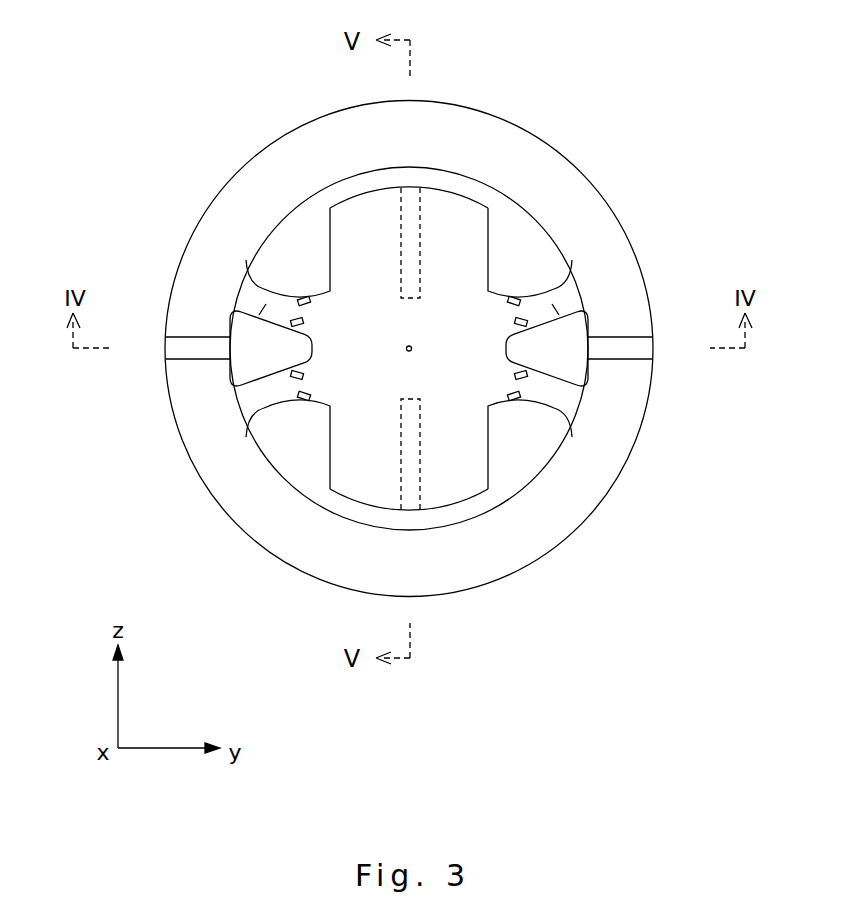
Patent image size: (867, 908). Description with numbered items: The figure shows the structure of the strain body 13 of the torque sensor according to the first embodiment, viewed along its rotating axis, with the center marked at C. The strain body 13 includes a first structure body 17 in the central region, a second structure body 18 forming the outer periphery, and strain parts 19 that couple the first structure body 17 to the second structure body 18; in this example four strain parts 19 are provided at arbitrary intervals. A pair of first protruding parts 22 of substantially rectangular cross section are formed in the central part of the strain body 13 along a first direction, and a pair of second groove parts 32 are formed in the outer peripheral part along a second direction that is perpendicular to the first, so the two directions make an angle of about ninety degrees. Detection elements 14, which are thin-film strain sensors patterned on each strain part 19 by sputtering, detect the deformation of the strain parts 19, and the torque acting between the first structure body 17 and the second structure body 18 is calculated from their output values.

The strain body 13 is at (589, 160).
The detection elements 14 is at (310, 303).
The first structure body 17 is at (468, 489).
The second structure body 18 is at (625, 433).
The strain parts 19 is at (264, 307).
The first protruding parts 22 is at (398, 281).
The second groove parts 32 is at (184, 342).
The center axis C is at (406, 352).